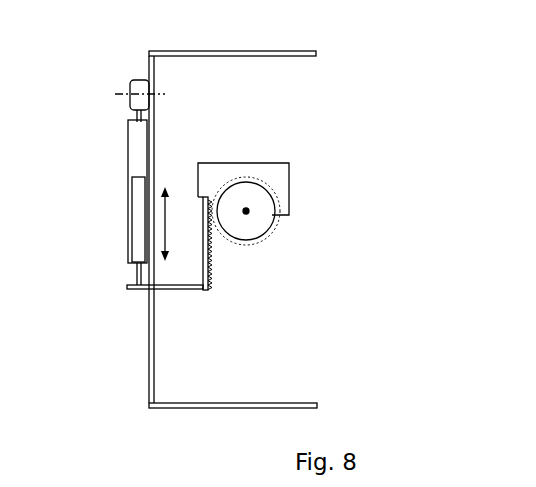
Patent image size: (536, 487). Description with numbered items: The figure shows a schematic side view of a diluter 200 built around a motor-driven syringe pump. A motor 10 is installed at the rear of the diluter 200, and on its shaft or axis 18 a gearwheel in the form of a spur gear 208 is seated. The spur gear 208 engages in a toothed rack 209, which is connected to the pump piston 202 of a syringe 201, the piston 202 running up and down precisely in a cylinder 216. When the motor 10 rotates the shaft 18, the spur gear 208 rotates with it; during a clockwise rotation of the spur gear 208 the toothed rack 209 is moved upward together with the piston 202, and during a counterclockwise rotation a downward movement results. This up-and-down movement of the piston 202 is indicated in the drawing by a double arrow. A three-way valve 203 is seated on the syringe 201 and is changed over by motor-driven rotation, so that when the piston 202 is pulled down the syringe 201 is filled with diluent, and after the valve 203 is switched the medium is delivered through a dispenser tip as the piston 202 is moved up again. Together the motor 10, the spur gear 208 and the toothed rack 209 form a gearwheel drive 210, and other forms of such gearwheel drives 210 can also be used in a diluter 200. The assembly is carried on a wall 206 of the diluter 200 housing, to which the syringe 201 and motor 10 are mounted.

The diluter 200 is at (405, 58).
The housing wall 206 is at (186, 51).
The three-way valve 203 is at (130, 83).
The cylinder 216 is at (128, 140).
The syringe 201 is at (113, 192).
The piston 202 is at (128, 262).
The motor 10 is at (283, 163).
The shaft 18 is at (249, 210).
The spur gear 208 is at (253, 227).
The toothed rack 209 is at (209, 277).
The gearwheel drive 210 is at (318, 285).